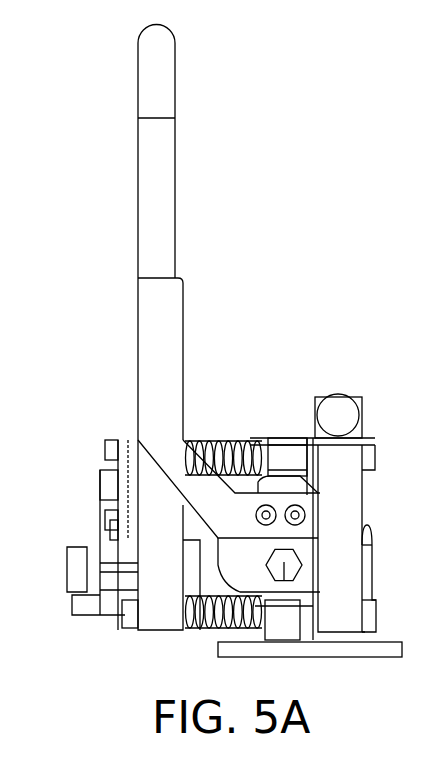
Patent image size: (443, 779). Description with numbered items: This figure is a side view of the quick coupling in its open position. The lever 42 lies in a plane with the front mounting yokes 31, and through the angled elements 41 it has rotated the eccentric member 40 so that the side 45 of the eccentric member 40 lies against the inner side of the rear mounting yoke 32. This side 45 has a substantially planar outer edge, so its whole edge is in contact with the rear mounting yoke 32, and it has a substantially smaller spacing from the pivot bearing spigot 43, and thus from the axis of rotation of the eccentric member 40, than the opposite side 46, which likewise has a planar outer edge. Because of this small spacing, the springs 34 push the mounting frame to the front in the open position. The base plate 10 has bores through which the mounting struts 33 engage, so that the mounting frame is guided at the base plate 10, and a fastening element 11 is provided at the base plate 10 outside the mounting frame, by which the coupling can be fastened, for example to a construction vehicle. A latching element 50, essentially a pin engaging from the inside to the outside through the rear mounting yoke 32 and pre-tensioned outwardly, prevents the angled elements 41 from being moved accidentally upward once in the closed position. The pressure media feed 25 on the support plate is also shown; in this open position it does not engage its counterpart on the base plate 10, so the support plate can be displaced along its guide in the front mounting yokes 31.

The lever 42 is at (163, 153).
The angled elements 41 is at (184, 368).
The springs 34 is at (218, 440).
The side 46 is at (267, 438).
The base plate 10 is at (275, 438).
The mounting struts 33 is at (304, 440).
The eccentric member 40 is at (240, 585).
The pivot bearing spigot 43 is at (288, 605).
The rear mounting yoke 32 is at (363, 493).
The latching element 50 is at (352, 420).
The side 45 is at (320, 560).
The fastening element 11 is at (342, 657).
The front mounting yokes 31 is at (160, 603).
The pressure media feed 25 is at (68, 563).